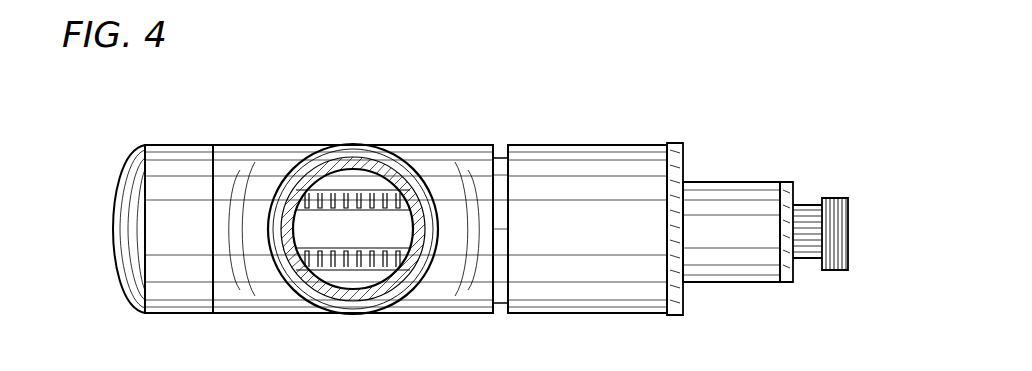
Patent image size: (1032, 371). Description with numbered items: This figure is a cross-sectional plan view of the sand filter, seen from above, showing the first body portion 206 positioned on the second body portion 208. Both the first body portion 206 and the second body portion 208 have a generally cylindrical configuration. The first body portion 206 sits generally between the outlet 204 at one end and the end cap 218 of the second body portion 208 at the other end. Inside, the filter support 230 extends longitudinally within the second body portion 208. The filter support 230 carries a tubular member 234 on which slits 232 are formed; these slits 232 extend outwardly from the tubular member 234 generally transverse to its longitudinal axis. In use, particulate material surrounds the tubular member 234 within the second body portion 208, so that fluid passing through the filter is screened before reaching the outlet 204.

The outlet 204 is at (812, 268).
The first body portion 206 is at (315, 162).
The second body portion 208 is at (592, 147).
The end cap 218 is at (120, 240).
The filter support 230 is at (370, 277).
The slits 232 is at (332, 193).
The tubular member 234 is at (337, 237).